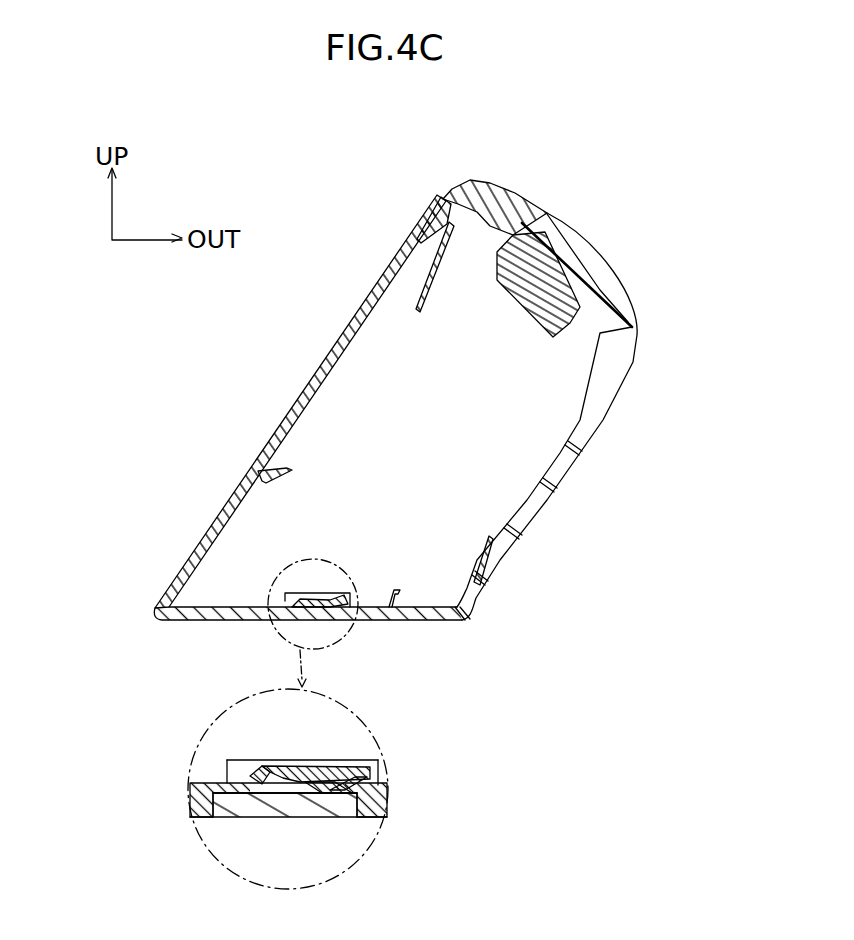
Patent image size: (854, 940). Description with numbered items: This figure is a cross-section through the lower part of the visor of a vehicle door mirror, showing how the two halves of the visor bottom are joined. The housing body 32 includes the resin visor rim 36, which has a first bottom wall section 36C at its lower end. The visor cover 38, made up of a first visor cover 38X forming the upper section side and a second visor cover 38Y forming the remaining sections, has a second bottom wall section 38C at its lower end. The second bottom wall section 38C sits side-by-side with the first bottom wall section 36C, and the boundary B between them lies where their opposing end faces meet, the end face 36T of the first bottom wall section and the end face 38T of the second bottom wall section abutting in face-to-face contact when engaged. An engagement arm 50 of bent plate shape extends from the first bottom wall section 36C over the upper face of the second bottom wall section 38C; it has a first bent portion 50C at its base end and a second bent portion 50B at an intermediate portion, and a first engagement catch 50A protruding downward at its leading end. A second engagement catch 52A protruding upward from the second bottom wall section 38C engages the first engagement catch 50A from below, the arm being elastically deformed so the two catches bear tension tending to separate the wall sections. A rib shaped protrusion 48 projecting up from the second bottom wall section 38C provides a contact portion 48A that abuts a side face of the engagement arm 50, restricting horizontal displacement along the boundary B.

The housing body 32 is at (198, 440).
The visor rim 36 is at (180, 538).
The first bottom wall section 36C is at (210, 626).
The end face of first bottom wall section 36T is at (232, 822).
The visor cover 38 is at (612, 422).
The first visor cover 38X is at (483, 177).
The second visor cover 38Y is at (630, 362).
The second bottom wall section 38C is at (415, 626).
The end face of second bottom wall section 38T is at (190, 808).
The rib shaped protrusion 48 is at (383, 752).
The contact portion 48A is at (256, 752).
The engagement arm 50 is at (276, 764).
The first engagement catch 50A is at (368, 818).
The second bent portion 50B is at (295, 768).
The first bent portion 50C is at (225, 780).
The second engagement catch 52A is at (365, 756).
The boundary B is at (213, 825).